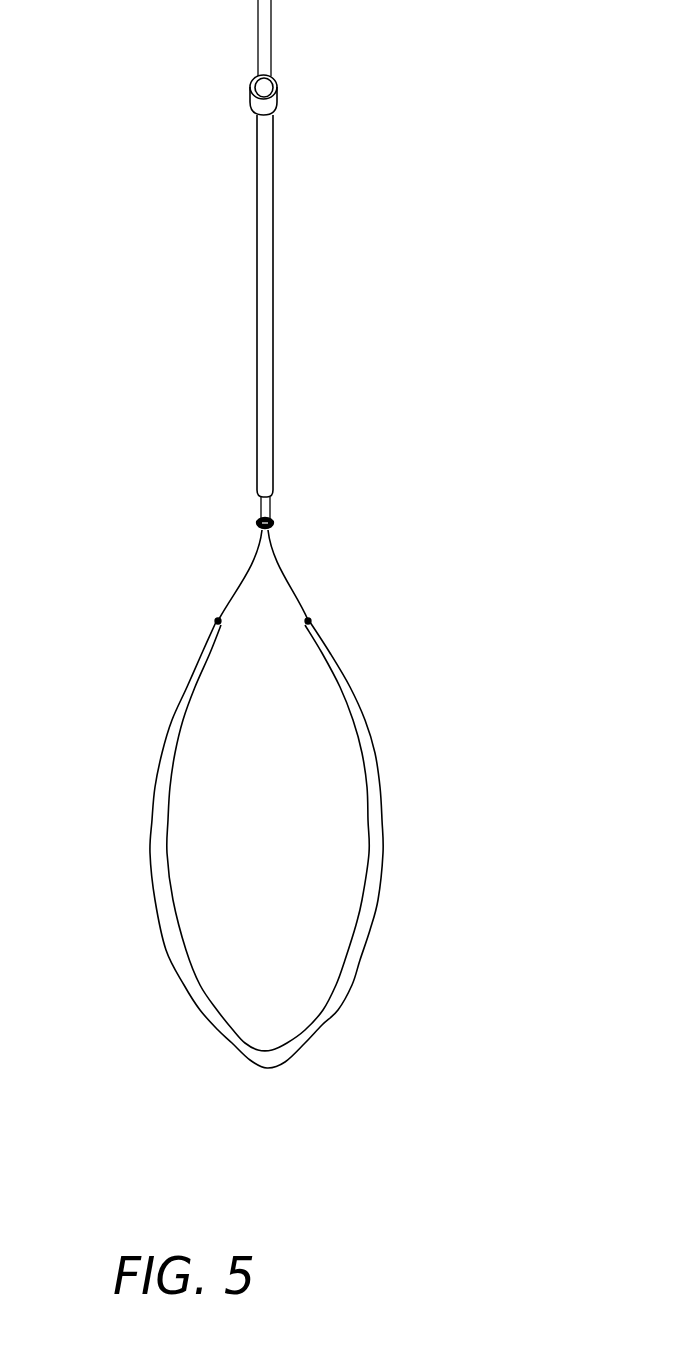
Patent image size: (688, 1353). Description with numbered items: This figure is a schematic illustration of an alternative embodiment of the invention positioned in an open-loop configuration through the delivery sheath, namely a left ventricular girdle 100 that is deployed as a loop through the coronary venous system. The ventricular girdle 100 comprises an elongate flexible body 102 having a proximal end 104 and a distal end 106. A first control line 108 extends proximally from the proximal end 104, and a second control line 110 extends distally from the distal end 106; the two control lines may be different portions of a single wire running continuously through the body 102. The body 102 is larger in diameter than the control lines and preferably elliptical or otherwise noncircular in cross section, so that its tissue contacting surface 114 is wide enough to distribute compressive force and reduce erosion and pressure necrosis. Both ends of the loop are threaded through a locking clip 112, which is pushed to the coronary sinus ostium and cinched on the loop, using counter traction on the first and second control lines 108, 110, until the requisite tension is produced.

The left ventricular girdle 100 is at (300, 821).
The elongate flexible body 102 is at (323, 1023).
The proximal end 104 is at (308, 620).
The distal end 106 is at (218, 619).
The first control line 108 is at (272, 47).
The second control line 110 is at (258, 23).
The locking clip 112 is at (258, 520).
The tissue contacting surface 114 is at (361, 900).